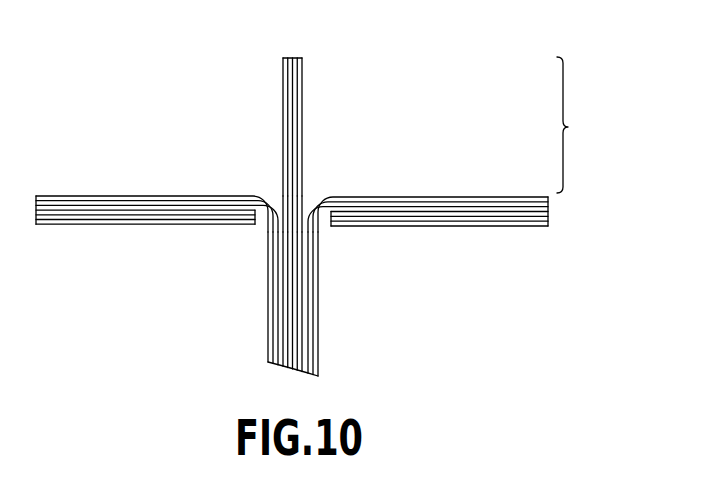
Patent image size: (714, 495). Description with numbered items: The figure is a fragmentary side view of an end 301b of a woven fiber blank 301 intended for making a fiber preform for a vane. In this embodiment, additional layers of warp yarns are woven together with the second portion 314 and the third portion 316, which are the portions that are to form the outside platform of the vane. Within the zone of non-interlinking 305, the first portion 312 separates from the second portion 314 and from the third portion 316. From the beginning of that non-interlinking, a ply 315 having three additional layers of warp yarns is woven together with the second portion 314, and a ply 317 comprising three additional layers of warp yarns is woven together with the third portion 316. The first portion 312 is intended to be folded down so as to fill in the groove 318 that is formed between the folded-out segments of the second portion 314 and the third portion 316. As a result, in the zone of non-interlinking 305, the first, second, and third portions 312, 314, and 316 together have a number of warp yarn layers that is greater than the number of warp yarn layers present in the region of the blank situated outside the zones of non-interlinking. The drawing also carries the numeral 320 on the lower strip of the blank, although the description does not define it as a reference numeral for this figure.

The end of fiber blank 301b is at (224, 82).
The fiber blank 301 is at (345, 307).
The zone of non-interlinking 305 is at (583, 125).
The first portion 312 is at (302, 81).
The second portion 314 is at (123, 199).
The ply 315 is at (141, 221).
The third portion 316 is at (473, 198).
The ply 317 is at (452, 221).
The groove 318 is at (307, 193).
The lower vertical strip of plies 320 is at (267, 320).